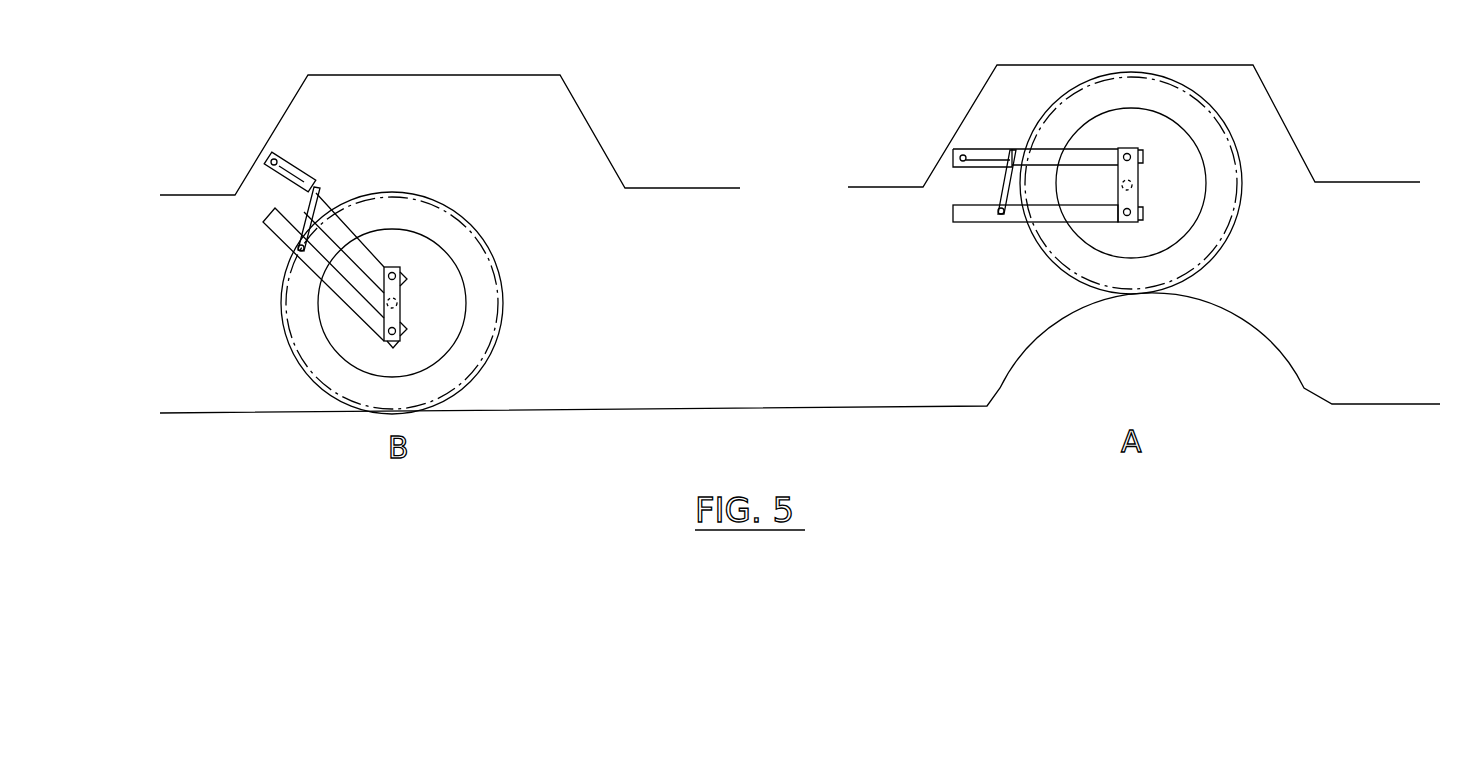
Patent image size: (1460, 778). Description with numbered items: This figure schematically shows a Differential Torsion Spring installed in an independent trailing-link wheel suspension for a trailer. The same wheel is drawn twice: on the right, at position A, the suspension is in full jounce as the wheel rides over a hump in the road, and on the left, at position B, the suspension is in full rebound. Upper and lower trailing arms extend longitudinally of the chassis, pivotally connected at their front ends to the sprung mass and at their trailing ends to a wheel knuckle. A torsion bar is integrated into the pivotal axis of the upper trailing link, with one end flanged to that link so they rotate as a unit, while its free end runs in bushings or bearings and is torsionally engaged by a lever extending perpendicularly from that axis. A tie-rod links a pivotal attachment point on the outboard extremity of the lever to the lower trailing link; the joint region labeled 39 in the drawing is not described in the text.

The pivot joint 39 is at (312, 188).